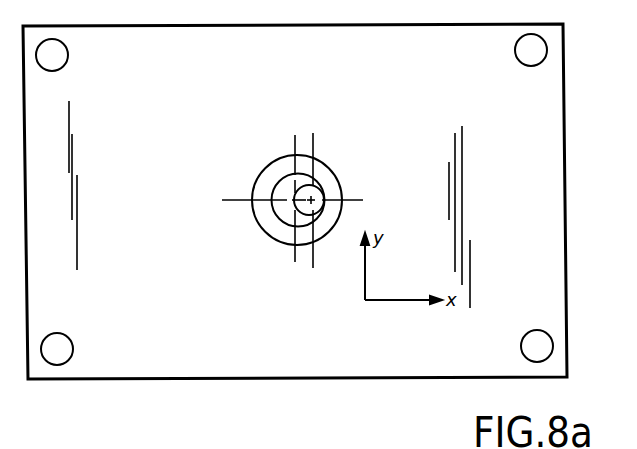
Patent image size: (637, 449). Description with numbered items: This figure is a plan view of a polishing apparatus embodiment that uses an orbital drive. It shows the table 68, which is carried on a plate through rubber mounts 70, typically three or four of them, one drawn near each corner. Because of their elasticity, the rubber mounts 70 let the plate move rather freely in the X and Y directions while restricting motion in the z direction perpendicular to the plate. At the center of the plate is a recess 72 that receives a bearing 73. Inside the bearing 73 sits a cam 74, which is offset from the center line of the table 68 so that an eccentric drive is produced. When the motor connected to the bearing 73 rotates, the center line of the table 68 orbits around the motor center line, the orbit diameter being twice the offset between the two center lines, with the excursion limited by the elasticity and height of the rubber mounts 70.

The table 68 is at (565, 99).
The rubber mounts 70 is at (534, 50).
The recess 72 is at (290, 183).
The bearing 73 is at (340, 188).
The cam 74 is at (316, 188).